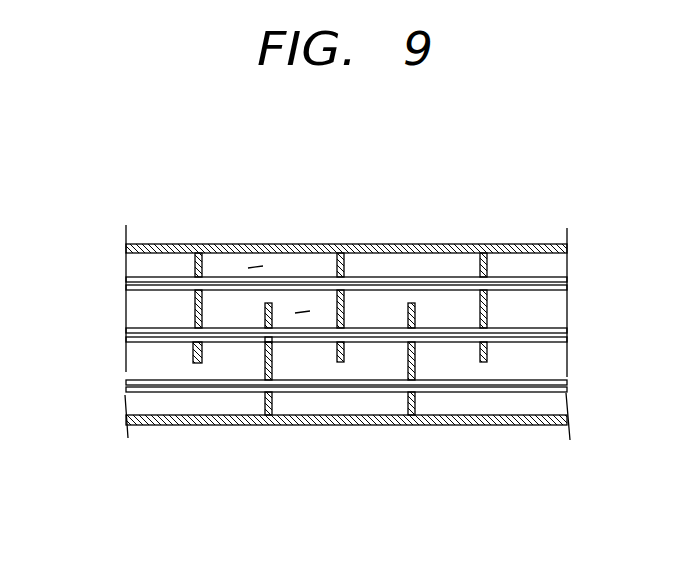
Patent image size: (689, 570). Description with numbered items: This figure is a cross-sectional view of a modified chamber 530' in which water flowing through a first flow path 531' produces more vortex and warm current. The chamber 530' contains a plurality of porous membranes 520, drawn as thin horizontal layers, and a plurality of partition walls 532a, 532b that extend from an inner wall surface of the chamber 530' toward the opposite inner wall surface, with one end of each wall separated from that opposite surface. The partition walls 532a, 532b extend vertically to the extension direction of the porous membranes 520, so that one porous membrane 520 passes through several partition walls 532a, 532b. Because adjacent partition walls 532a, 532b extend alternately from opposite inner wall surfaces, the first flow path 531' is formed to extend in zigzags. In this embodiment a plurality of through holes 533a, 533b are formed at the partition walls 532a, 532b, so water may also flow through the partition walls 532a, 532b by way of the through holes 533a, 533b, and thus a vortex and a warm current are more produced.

The chamber 530' is at (346, 204).
The first flow path 531' is at (289, 232).
The porous membrane 520 is at (445, 290).
The through hole 533a is at (192, 310).
The partition wall 532a is at (192, 322).
The through hole 533b is at (267, 402).
The partition wall 532b is at (272, 348).